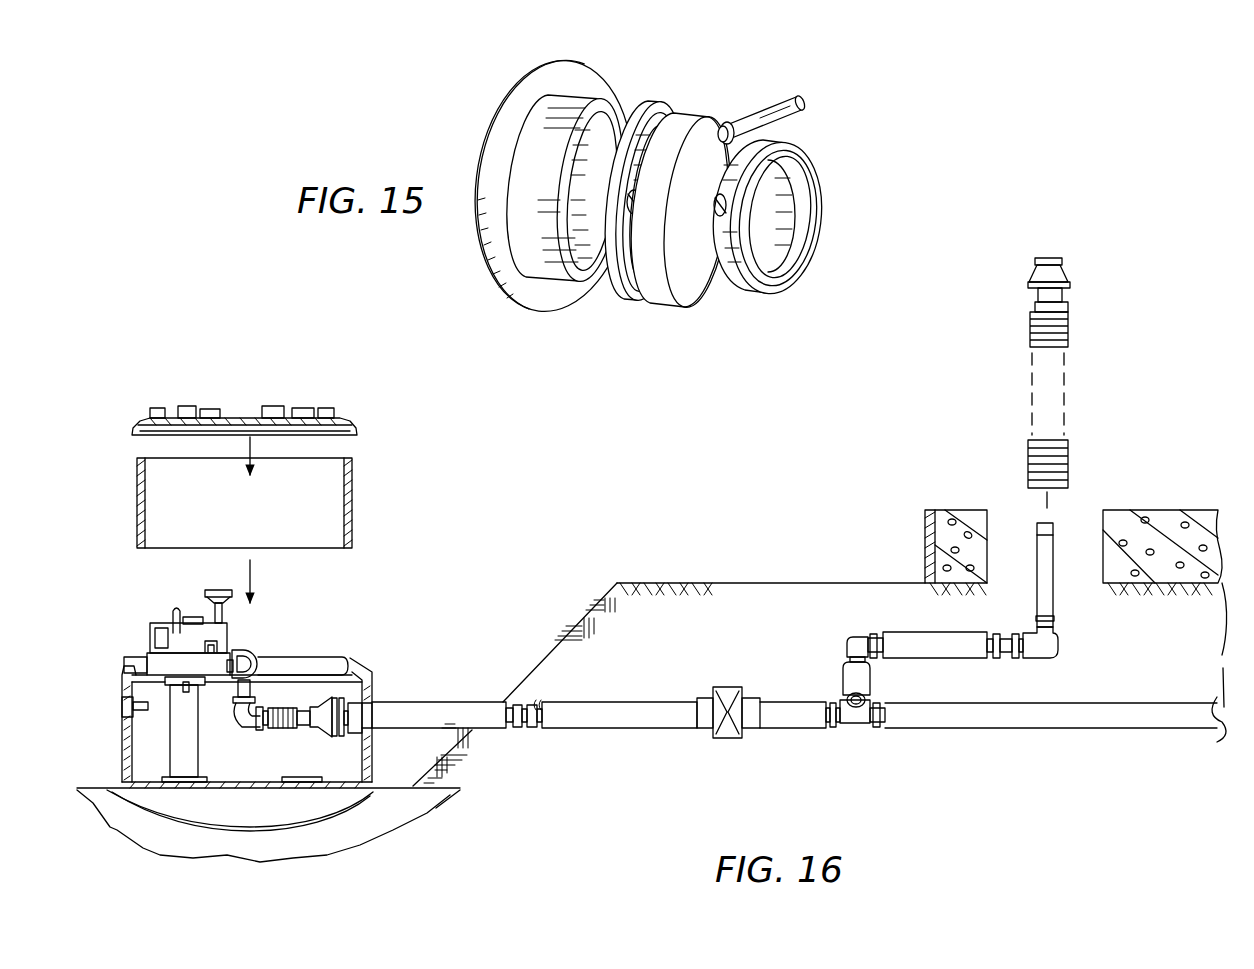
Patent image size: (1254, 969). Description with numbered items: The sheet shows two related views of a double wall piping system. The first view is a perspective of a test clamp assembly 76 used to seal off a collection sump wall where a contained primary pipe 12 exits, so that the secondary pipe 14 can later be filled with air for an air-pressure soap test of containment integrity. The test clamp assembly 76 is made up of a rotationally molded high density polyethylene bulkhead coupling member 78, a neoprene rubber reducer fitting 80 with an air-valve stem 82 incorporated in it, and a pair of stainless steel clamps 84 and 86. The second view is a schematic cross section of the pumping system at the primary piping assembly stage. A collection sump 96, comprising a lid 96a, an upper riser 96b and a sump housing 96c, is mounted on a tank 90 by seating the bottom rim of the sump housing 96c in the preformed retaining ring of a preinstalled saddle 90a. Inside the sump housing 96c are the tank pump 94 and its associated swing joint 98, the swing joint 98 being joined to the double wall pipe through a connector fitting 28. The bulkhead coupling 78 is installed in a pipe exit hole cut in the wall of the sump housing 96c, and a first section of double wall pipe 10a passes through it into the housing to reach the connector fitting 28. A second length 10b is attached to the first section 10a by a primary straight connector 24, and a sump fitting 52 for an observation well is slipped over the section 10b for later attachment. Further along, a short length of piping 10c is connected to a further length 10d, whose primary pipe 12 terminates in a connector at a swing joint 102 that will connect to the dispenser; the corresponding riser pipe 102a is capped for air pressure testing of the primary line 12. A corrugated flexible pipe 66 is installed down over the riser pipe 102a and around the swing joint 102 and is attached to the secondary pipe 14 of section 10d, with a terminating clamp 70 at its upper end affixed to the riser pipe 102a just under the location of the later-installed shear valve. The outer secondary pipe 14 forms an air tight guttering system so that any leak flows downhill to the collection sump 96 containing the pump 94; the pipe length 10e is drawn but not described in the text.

In FIG. 15, the test clamp assembly 76 is at (688, 85).
In FIG. 16, the test clamp assembly 76 is at (318, 730).
In FIG. 15, the bulkhead coupling member 78 is at (537, 92).
In FIG. 16, the bulkhead coupling member 78 is at (368, 697).
In FIG. 15, the reducer fitting 80 is at (707, 147).
In FIG. 15, the air-valve stem 82 is at (763, 117).
In FIG. 15, the stainless steel clamp 84 is at (643, 277).
In FIG. 15, the stainless steel clamp 86 is at (730, 287).
In FIG. 16, the collection sump 96 is at (354, 563).
In FIG. 16, the lid 96a is at (357, 430).
In FIG. 16, the upper riser 96b is at (352, 516).
In FIG. 16, the sump housing 96c is at (370, 680).
In FIG. 16, the tank pump 94 is at (165, 730).
In FIG. 16, the swing joint 98 is at (244, 722).
In FIG. 16, the connector fitting 28 is at (272, 728).
In FIG. 16, the tank 90 is at (364, 812).
In FIG. 16, the saddle 90a is at (212, 805).
In FIG. 16, the primary pipe 12 is at (513, 698).
In FIG. 16, the primary straight connector 24 is at (540, 697).
In FIG. 16, the first section of double wall pipe 10a is at (485, 717).
In FIG. 16, the second length of double wall pipe 10b is at (642, 715).
In FIG. 16, the short length of piping 10c is at (863, 677).
In FIG. 16, the further length of piping 10d is at (908, 643).
In FIG. 16, the pipe section 10e is at (1015, 715).
In FIG. 16, the secondary pipe 14 is at (724, 721).
In FIG. 16, the sump fitting 52 is at (727, 741).
In FIG. 16, the swing joint 102 is at (1060, 660).
In FIG. 16, the riser pipe 102a is at (1053, 585).
In FIG. 16, the corrugated flexible pipe 66 is at (1078, 453).
In FIG. 16, the terminating clamp 70 is at (1062, 263).